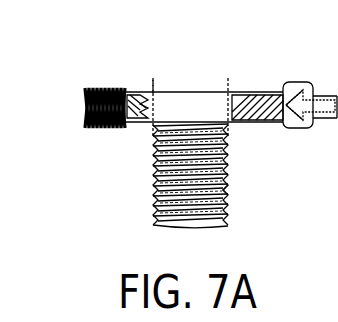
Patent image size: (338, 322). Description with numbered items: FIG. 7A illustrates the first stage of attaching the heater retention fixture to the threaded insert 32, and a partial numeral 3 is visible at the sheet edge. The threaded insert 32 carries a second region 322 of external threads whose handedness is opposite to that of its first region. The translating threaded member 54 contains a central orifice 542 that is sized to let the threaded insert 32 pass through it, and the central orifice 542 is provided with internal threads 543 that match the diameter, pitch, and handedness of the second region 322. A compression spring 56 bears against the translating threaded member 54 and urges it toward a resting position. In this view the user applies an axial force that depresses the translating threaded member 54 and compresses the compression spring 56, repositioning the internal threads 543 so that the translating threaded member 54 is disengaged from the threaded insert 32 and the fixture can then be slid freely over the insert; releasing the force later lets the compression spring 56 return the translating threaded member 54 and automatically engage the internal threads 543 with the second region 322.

The compression spring 56 is at (80, 100).
The translating threaded member 54 is at (261, 100).
The central orifice 542 is at (198, 103).
The internal threads 543 is at (152, 90).
The threaded insert 32 is at (155, 190).
The second region of external threads 322 is at (227, 192).
The implant 3 is at (334, 183).